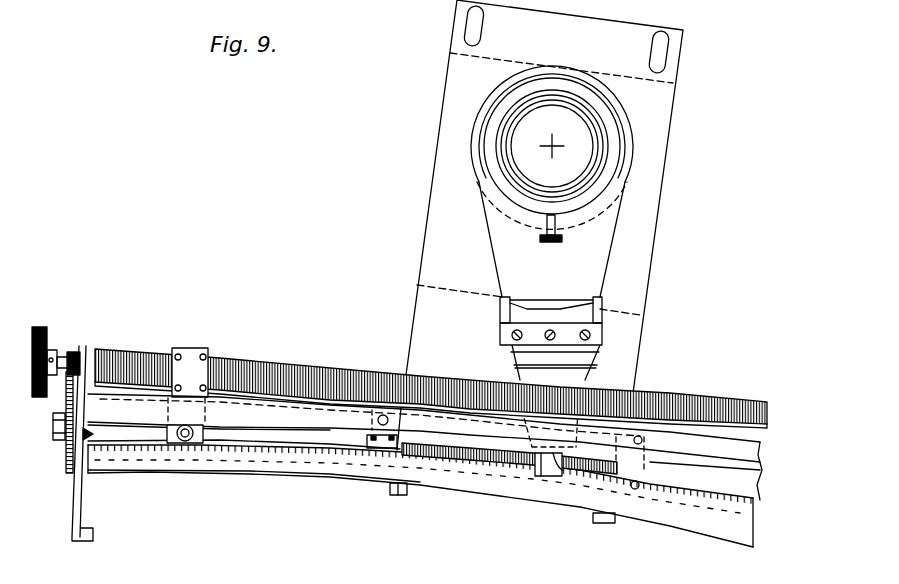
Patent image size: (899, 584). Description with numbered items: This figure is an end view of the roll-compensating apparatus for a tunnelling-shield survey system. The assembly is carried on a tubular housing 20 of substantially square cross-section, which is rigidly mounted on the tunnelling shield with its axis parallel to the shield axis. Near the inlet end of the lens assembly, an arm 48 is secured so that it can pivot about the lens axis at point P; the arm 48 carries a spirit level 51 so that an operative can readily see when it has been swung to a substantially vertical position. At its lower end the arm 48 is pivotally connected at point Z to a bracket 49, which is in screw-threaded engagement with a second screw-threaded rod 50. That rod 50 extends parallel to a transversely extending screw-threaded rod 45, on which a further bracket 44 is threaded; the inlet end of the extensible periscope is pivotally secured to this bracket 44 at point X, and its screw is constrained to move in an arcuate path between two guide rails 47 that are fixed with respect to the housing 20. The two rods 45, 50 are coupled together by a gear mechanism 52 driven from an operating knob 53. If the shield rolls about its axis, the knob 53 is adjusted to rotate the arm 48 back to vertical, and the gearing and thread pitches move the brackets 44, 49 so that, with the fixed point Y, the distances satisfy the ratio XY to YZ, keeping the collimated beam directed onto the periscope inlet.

The tubular housing 20 is at (653, 158).
The arm 48 is at (590, 268).
The spirit level 51 is at (527, 307).
The screw-threaded rod 45 is at (283, 372).
The bracket 44 is at (190, 360).
The operating knob 53 is at (45, 337).
The gear mechanism 52 is at (63, 393).
The guide rails 47 is at (275, 462).
The second screw-threaded rod 50 is at (487, 453).
The bracket 49 is at (533, 458).
The point X is at (178, 443).
The point Y is at (497, 470).
The point Z is at (550, 462).
The point P is at (552, 147).